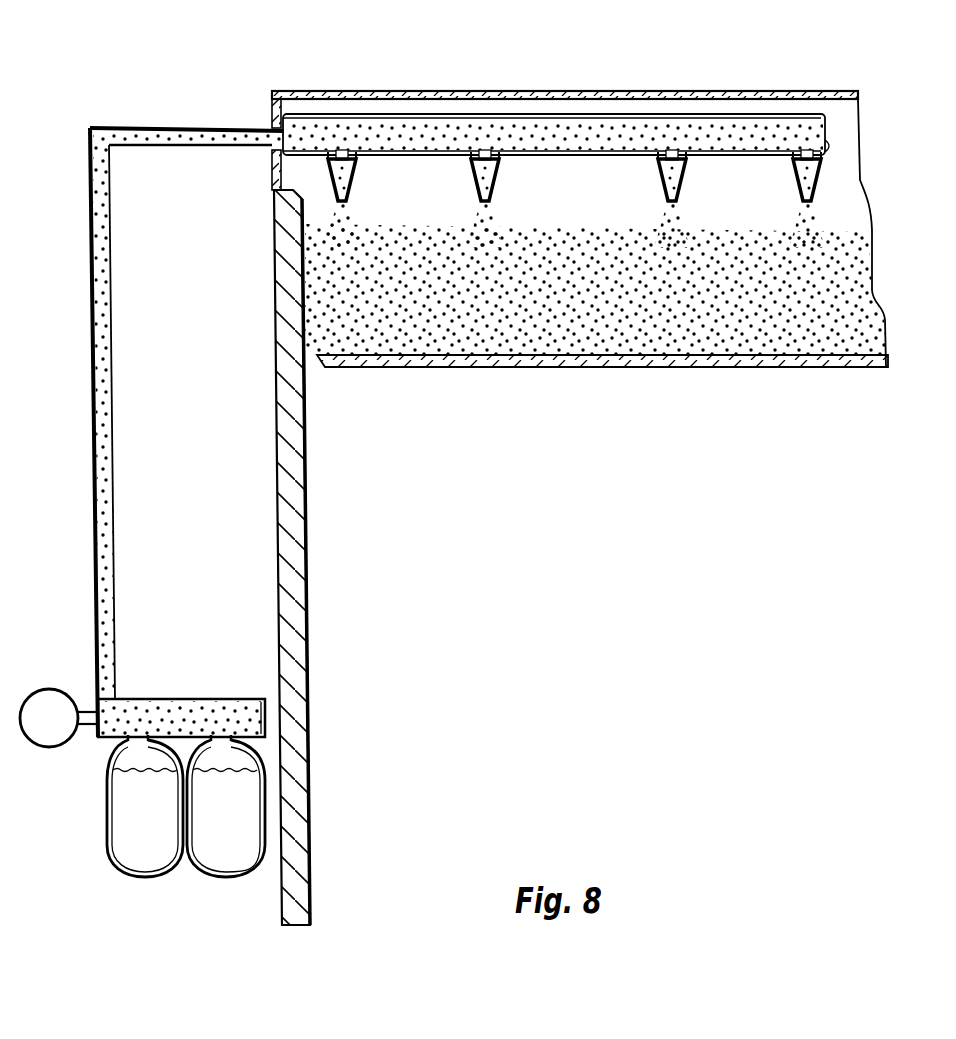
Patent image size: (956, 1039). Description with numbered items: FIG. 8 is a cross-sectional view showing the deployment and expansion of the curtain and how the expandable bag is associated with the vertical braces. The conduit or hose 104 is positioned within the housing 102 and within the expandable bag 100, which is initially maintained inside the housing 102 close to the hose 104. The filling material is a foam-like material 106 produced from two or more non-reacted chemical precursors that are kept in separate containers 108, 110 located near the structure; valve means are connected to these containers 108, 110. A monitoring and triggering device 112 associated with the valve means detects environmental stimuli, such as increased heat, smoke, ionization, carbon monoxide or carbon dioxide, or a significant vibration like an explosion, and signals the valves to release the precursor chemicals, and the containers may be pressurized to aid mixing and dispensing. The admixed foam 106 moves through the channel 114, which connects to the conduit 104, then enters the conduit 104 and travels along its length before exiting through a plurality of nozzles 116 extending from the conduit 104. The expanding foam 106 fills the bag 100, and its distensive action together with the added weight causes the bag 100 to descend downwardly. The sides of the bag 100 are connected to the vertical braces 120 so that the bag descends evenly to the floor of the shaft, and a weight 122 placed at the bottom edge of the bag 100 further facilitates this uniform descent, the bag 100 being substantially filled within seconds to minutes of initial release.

The expandable bag 100 is at (763, 322).
The housing 102 is at (398, 91).
The conduit or hose 104 is at (320, 115).
The foam-like material 106 is at (573, 116).
The container 108 is at (135, 848).
The container 110 is at (222, 852).
The monitoring and triggering device 112 is at (57, 689).
The channel 114 is at (108, 297).
The nozzles 116 is at (471, 175).
The vertical braces 120 is at (302, 552).
The weight 122 is at (601, 367).